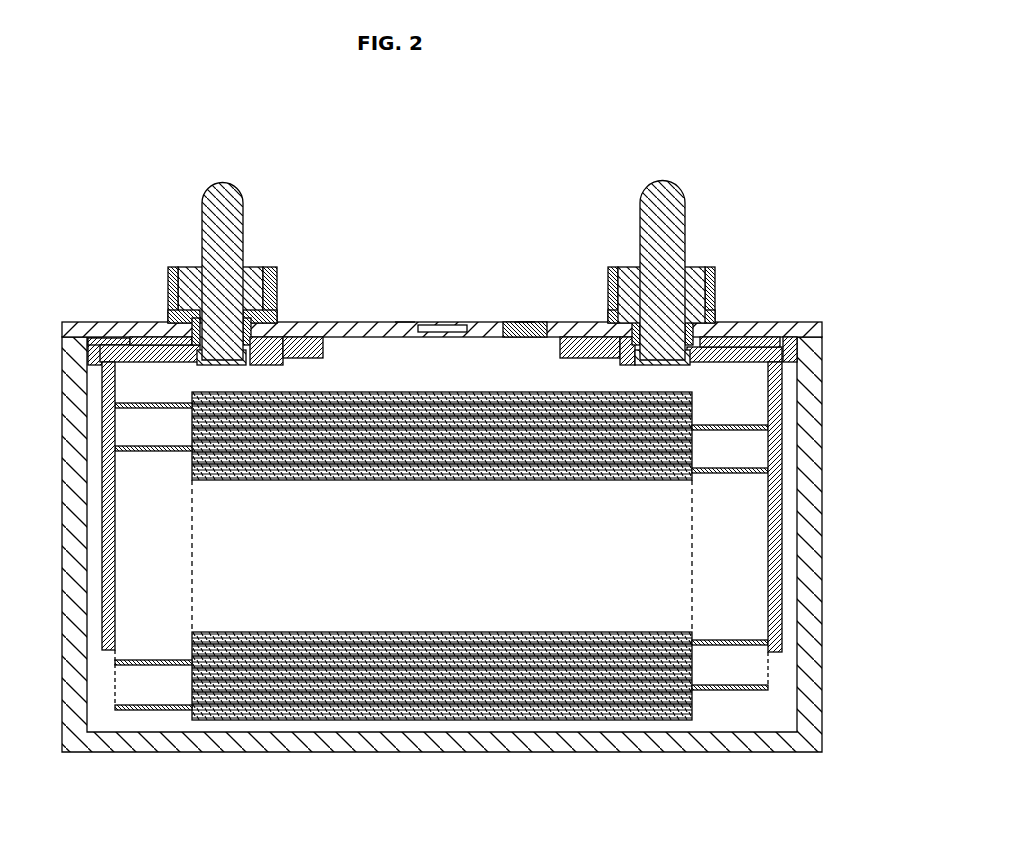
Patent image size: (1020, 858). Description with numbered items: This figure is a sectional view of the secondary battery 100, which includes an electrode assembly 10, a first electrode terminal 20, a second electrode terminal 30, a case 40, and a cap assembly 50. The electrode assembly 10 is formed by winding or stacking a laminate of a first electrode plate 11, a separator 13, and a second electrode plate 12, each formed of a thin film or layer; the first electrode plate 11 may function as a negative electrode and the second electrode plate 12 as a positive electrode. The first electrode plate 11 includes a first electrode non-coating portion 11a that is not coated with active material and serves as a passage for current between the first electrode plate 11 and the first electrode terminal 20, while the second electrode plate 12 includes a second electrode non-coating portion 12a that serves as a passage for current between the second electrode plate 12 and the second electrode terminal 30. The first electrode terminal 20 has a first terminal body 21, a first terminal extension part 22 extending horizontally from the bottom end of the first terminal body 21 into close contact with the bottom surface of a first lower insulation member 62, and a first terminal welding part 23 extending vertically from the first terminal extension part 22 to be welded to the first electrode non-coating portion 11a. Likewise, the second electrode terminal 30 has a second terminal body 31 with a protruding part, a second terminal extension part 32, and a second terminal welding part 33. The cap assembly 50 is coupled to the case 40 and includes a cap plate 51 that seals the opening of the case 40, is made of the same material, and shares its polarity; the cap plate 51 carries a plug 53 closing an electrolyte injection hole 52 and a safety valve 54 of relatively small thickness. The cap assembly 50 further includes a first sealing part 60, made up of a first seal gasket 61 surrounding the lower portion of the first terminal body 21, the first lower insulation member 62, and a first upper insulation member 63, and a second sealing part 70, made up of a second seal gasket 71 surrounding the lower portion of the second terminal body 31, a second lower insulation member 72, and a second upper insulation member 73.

The secondary battery 100 is at (852, 184).
The electrode assembly 10 is at (445, 722).
The first electrode plate 11 is at (253, 720).
The first electrode non-coating portion 11a is at (160, 708).
The second electrode plate 12 is at (590, 720).
The second electrode non-coating portion 12a is at (717, 690).
The separator 13 is at (345, 722).
The first electrode terminal 20 is at (155, 190).
The first terminal body 21 is at (200, 258).
The first terminal extension part 22 is at (137, 340).
The first terminal welding part 23 is at (85, 330).
The second electrode terminal 30 is at (727, 190).
The second terminal body 31 is at (687, 258).
The second terminal extension part 32 is at (747, 337).
The second terminal welding part 33 is at (798, 337).
The case 40 is at (810, 544).
The cap assembly 50 is at (476, 323).
The cap plate 51 is at (405, 323).
The electrolyte injection hole 52 is at (512, 325).
The plug 53 is at (523, 325).
The safety valve 54 is at (440, 325).
The first sealing part 60 is at (268, 190).
The first seal gasket 61 is at (245, 310).
The first lower insulation member 62 is at (325, 338).
The first upper insulation member 63 is at (276, 287).
The second sealing part 70 is at (533, 190).
The second seal gasket 71 is at (637, 305).
The second lower insulation member 72 is at (563, 338).
The second upper insulation member 73 is at (608, 297).